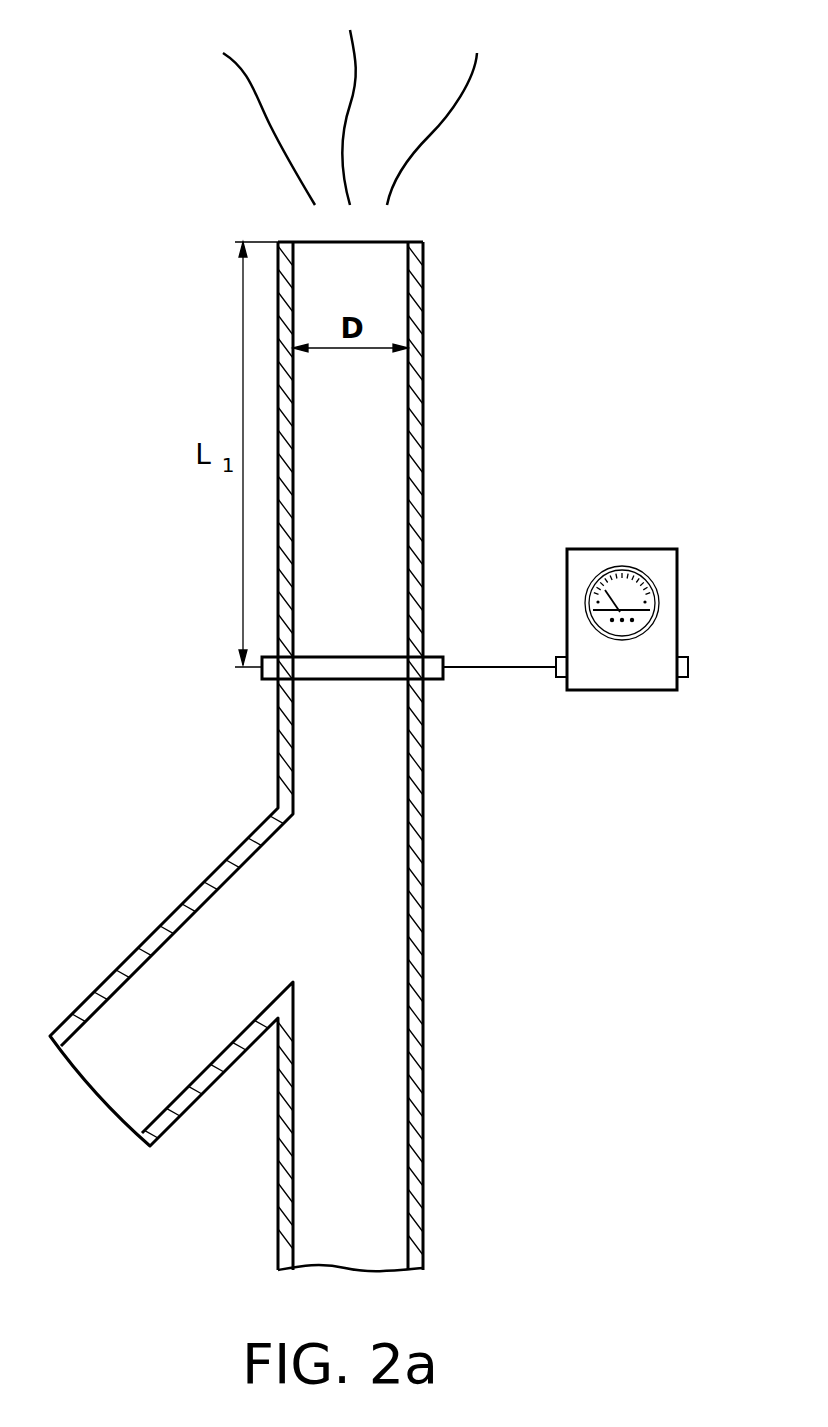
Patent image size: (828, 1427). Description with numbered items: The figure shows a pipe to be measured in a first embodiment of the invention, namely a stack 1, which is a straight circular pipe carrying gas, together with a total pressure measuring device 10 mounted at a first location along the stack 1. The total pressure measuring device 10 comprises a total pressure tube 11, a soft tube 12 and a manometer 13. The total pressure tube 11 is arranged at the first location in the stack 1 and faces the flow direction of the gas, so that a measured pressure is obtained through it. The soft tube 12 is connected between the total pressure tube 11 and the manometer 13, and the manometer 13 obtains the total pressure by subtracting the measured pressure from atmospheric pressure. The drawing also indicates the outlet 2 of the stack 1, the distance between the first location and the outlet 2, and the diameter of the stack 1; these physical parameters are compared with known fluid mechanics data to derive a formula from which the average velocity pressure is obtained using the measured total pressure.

The stack 1 is at (417, 1090).
The outlet 2 is at (388, 240).
The total pressure measuring device 10 is at (458, 450).
The total pressure tube 11 is at (430, 658).
The soft tube 12 is at (503, 667).
The manometer 13 is at (621, 549).